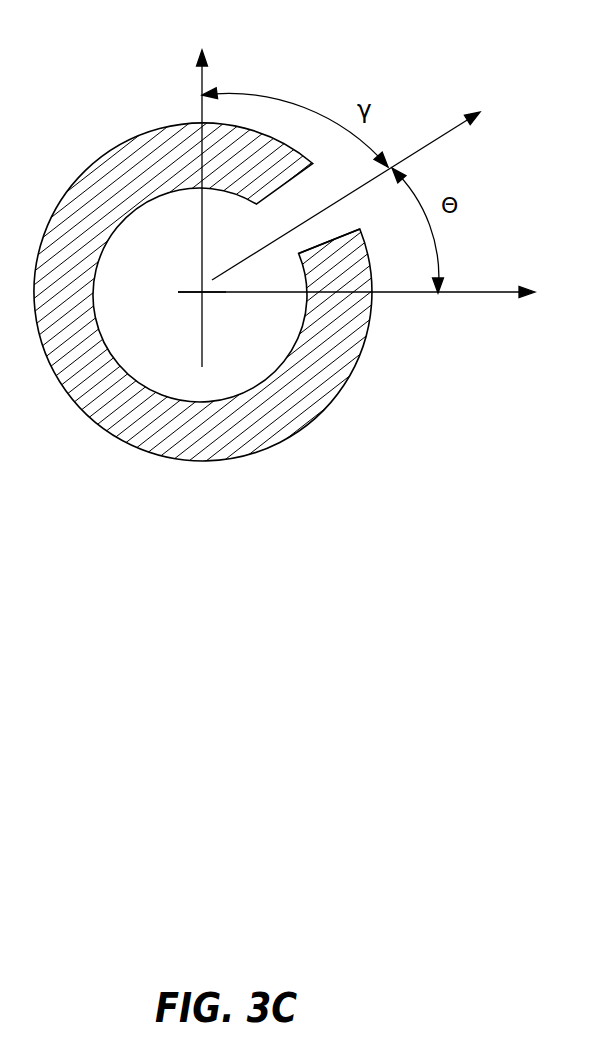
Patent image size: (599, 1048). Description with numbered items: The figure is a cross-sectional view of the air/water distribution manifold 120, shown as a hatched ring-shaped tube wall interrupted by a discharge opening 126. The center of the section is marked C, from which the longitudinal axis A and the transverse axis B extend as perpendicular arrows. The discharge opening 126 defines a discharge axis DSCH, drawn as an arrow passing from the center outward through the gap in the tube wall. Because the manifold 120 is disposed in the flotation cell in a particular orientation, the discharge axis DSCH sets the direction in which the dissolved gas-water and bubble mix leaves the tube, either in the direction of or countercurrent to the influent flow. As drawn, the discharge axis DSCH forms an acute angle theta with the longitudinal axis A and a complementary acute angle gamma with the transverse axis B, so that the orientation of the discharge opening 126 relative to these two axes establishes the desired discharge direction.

The air/water distribution manifold 120 is at (86, 168).
The discharge opening 126 is at (341, 214).
The longitudinal axis A is at (372, 292).
The transverse axis B is at (200, 192).
The center C is at (182, 299).
The discharge axis DSCH is at (387, 188).